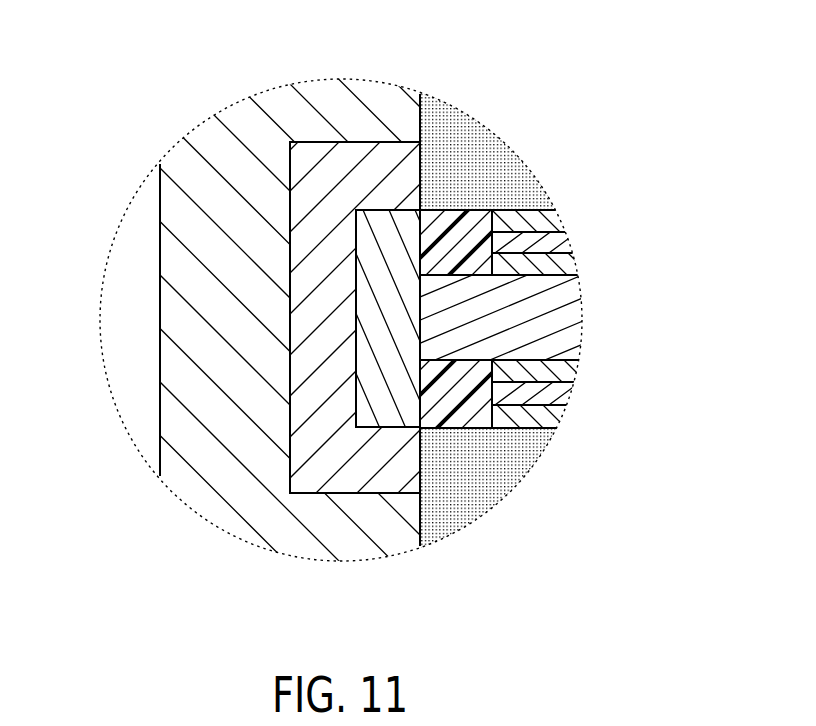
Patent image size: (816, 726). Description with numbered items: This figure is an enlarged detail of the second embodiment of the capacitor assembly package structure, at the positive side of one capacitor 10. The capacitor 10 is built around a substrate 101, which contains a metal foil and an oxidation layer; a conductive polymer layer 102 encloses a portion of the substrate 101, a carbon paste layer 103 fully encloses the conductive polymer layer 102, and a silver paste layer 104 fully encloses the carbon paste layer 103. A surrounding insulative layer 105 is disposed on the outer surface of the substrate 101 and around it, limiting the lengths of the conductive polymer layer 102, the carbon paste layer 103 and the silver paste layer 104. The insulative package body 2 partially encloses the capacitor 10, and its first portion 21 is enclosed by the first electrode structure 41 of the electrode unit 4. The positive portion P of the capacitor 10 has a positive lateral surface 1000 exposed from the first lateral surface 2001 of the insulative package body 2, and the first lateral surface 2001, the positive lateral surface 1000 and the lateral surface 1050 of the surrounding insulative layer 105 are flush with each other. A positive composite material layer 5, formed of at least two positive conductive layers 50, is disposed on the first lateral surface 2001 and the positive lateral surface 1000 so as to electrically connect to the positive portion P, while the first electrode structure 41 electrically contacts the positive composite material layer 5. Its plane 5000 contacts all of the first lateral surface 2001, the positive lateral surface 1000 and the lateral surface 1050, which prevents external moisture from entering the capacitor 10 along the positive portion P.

The first lateral surface 2001 is at (405, 121).
The plane 5000 is at (436, 171).
The insulative package body 2 is at (508, 136).
The surrounding insulative layer 105 is at (474, 218).
The silver paste layer 104 is at (545, 226).
The carbon paste layer 103 is at (548, 243).
The conductive polymer layer 102 is at (553, 263).
The substrate 101 is at (541, 317).
The capacitor 10 is at (566, 307).
The lateral surface 1050 is at (405, 243).
The positive portion P is at (404, 291).
The positive lateral surface 1000 is at (405, 332).
The electrode unit 4 is at (257, 353).
The first electrode structure 41 is at (225, 480).
The positive conductive layer 50 is at (393, 410).
The positive composite material layer 5 is at (397, 329).
The first portion 21 is at (470, 492).